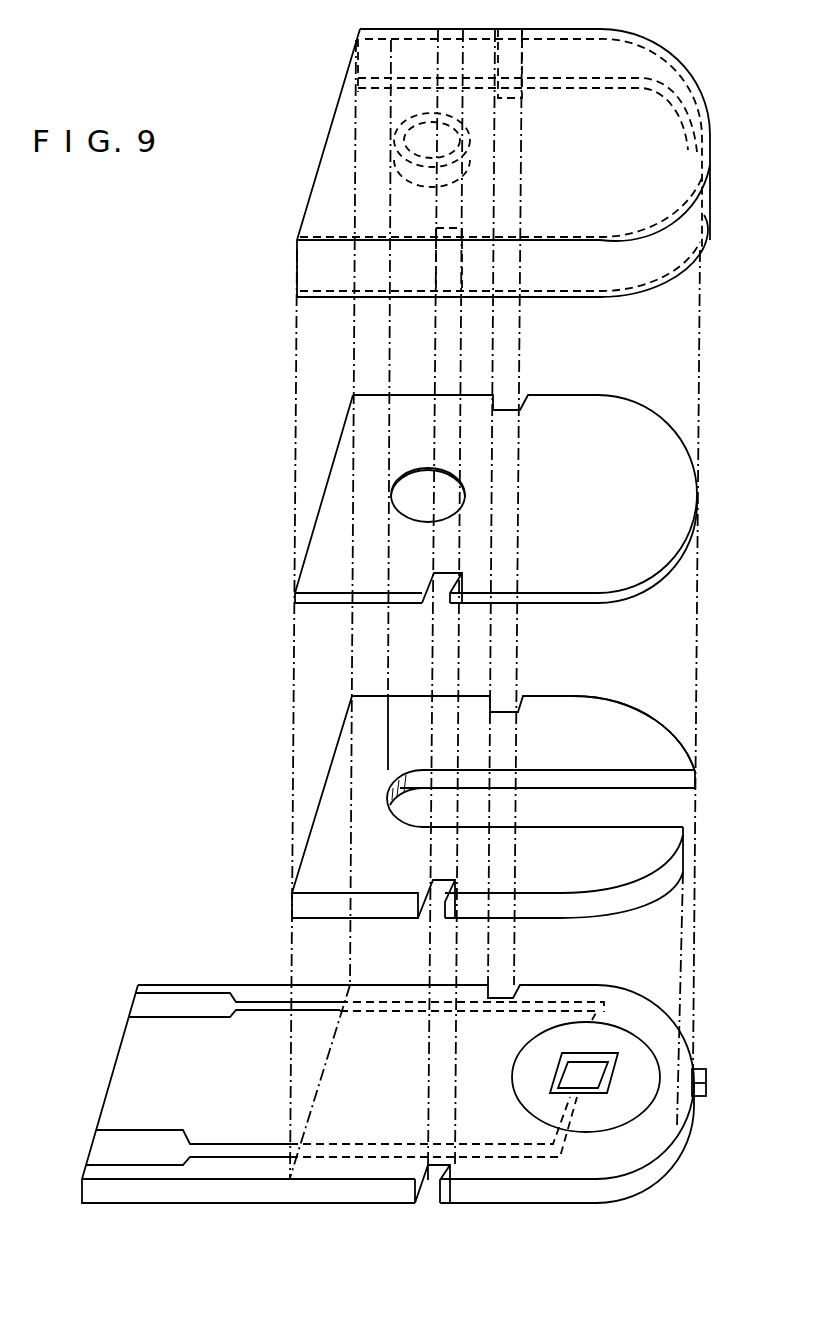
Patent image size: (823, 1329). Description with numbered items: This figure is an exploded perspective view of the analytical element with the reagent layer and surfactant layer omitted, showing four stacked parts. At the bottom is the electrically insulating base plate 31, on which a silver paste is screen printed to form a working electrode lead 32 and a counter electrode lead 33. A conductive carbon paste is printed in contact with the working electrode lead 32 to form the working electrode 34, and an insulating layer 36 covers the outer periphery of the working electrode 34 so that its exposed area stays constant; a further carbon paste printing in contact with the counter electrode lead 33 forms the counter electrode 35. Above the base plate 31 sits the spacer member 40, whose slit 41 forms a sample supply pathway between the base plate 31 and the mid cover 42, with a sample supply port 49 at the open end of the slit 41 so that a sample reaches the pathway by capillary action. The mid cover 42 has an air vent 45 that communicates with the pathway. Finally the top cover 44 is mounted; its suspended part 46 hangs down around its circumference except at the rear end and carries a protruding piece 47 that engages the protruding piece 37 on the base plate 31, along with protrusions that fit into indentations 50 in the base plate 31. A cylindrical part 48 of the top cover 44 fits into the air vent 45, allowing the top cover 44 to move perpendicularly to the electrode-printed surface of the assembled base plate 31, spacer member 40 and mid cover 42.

The base plate 31 is at (138, 1050).
The working electrode lead 32 is at (108, 1146).
The counter electrode lead 33 is at (143, 1005).
The working electrode 34 is at (592, 1078).
The counter electrode 35 is at (605, 1042).
The insulating layer 36 is at (350, 1133).
The protruding piece 37 is at (707, 1083).
The spacer member 40 is at (337, 797).
The slit 41 is at (593, 805).
The mid cover 42 is at (340, 511).
The top cover 44 is at (322, 180).
The air vent 45 is at (423, 495).
The suspended part 46 is at (318, 268).
The protruding piece 47 is at (708, 230).
The cylindrical part 48 is at (395, 170).
The sample supply port 49 is at (670, 813).
The indentations 50 is at (430, 1188).